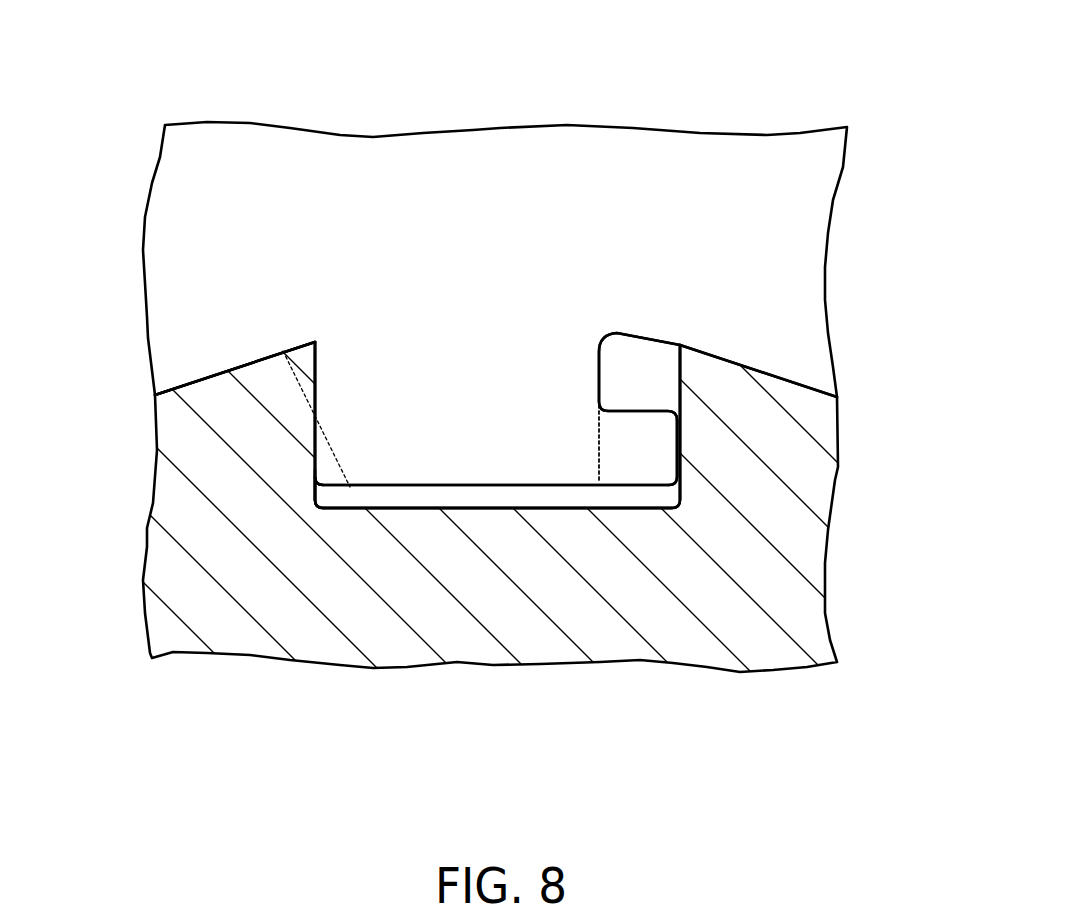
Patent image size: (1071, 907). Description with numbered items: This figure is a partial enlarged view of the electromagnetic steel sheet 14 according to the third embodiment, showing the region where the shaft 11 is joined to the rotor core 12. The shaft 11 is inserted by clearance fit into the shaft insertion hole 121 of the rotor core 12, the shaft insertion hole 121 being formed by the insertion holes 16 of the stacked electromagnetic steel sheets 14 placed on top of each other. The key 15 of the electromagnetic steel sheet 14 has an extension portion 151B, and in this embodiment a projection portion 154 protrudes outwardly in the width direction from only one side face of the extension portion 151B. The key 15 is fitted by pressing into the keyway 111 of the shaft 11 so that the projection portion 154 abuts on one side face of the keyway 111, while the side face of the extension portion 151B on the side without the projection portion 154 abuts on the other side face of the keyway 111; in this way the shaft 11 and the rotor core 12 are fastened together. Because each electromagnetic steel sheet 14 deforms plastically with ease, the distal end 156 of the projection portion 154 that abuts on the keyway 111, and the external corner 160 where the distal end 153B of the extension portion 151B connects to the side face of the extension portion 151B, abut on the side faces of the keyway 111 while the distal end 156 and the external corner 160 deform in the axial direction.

The shaft 11 is at (747, 644).
The rotor core 12 is at (703, 121).
The electromagnetic steel sheet 14 is at (727, 187).
The key 15 is at (638, 372).
The insertion hole 16 is at (193, 377).
The shaft insertion hole 121 is at (235, 368).
The extension portion 151B is at (483, 400).
The distal end of the extension portion 153B is at (500, 477).
The projection portion 154 is at (620, 443).
The distal end of the projection portion 156 is at (667, 453).
The external corner 160 is at (323, 472).
The keyway 111 is at (569, 508).